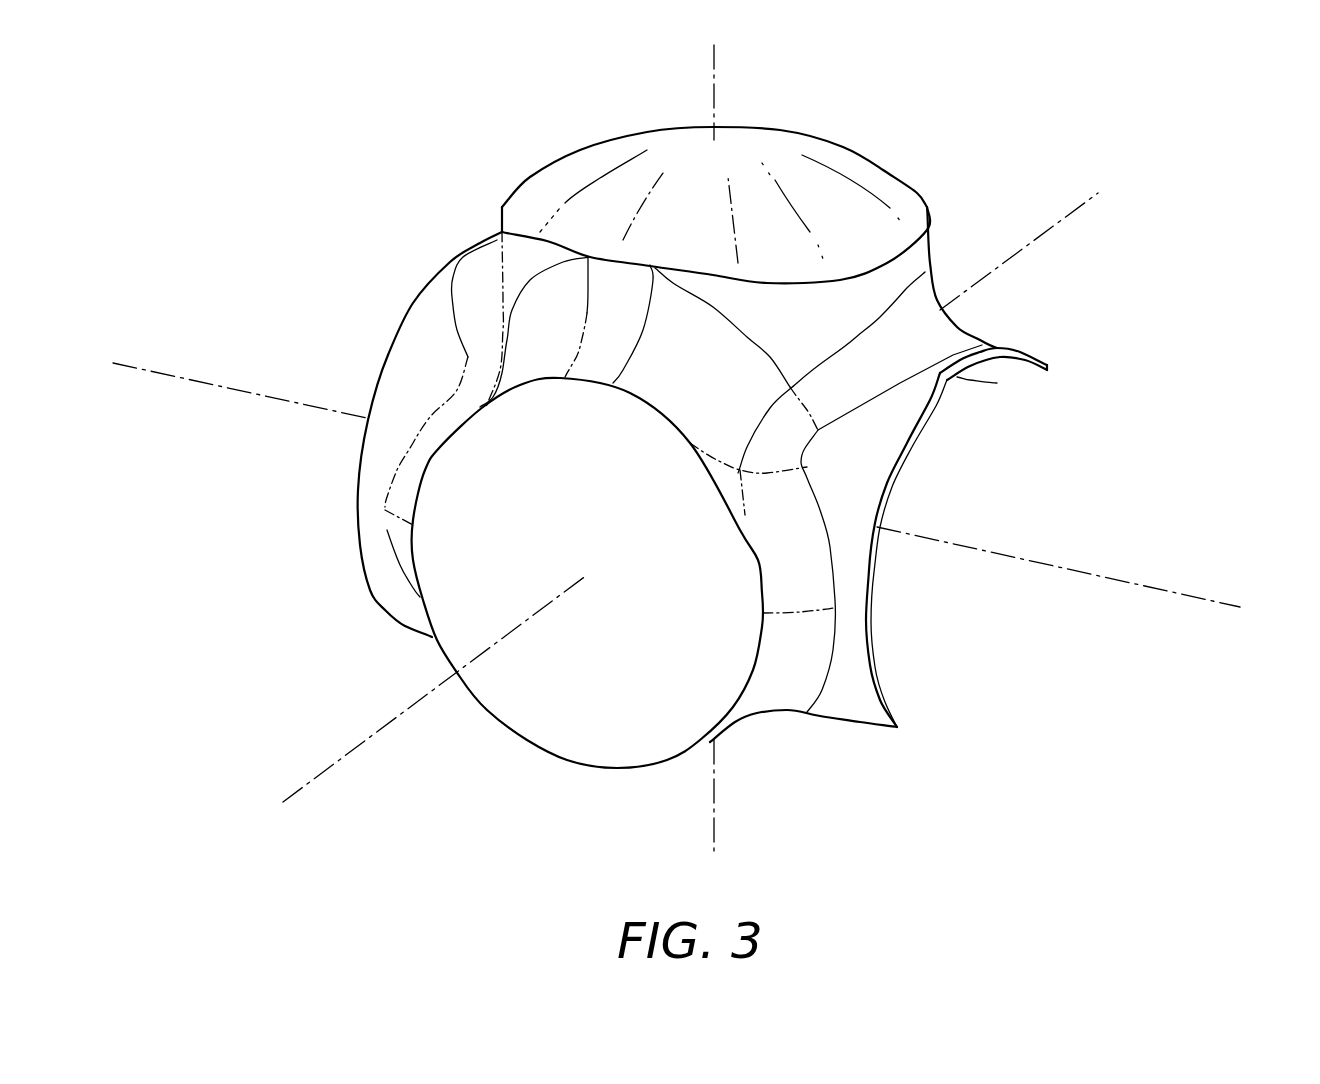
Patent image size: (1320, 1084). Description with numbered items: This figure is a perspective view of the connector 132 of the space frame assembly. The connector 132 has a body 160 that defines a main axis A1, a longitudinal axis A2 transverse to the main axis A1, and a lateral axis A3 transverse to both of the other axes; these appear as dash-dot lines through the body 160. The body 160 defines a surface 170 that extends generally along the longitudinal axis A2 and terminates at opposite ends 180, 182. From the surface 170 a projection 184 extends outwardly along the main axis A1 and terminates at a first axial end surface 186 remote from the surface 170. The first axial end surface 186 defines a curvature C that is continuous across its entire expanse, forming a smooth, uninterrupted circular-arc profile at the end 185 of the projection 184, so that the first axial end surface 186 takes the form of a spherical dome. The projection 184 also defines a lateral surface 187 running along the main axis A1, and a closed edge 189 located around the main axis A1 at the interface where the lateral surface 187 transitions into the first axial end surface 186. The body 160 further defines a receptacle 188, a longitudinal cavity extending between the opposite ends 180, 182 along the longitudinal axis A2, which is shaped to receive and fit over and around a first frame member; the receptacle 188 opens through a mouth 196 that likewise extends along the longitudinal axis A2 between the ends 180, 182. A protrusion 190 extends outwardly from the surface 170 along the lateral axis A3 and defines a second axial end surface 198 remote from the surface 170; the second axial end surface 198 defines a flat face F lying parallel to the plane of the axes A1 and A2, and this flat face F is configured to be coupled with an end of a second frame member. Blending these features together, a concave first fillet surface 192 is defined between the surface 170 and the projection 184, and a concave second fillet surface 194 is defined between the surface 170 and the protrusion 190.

The connector 132 is at (1024, 98).
The body 160 is at (492, 221).
The first axial end surface 186 is at (812, 148).
The curvature C is at (833, 157).
The projection 184 is at (928, 194).
The lateral surface 187 is at (930, 243).
The closed edge 189 is at (883, 267).
The end 185 is at (858, 285).
The surface 170 is at (982, 347).
The end 180 is at (1048, 366).
The first fillet surface 192 is at (932, 345).
The receptacle 188 is at (930, 443).
The mouth 196 is at (893, 475).
The second fillet surface 194 is at (797, 553).
The protrusion 190 is at (765, 655).
The end 182 is at (400, 327).
The second axial end surface 198 is at (449, 578).
The flat face F is at (470, 607).
The main axis A1 is at (714, 55).
The longitudinal axis A2 is at (1260, 610).
The lateral axis A3 is at (313, 780).